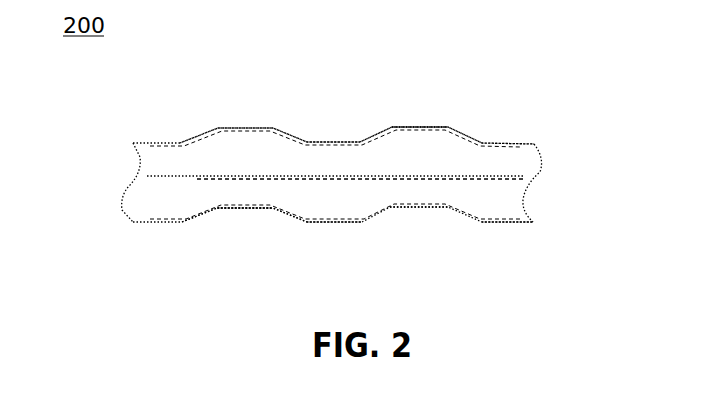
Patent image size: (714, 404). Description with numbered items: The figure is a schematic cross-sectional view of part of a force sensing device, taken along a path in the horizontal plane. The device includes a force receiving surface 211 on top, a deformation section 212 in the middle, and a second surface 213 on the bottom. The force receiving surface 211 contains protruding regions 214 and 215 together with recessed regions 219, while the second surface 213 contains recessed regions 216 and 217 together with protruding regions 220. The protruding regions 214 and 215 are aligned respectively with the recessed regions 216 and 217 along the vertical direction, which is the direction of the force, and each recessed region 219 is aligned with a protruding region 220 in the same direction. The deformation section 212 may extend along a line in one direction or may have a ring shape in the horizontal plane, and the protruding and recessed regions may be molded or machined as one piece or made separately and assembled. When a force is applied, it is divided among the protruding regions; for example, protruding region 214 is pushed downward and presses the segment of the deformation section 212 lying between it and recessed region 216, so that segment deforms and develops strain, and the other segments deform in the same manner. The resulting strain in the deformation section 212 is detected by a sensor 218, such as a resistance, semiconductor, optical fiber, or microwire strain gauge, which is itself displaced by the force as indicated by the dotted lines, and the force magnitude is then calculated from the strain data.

The force receiving surface 211 is at (432, 128).
The deformation section 212 is at (552, 144).
The second surface 213 is at (228, 210).
The protruding region 214 is at (215, 133).
The protruding region 215 is at (390, 133).
The recessed region 216 is at (248, 200).
The recessed region 217 is at (423, 198).
The sensor 218 is at (242, 178).
The recessed region 219 is at (335, 148).
The protruding region 220 is at (342, 215).